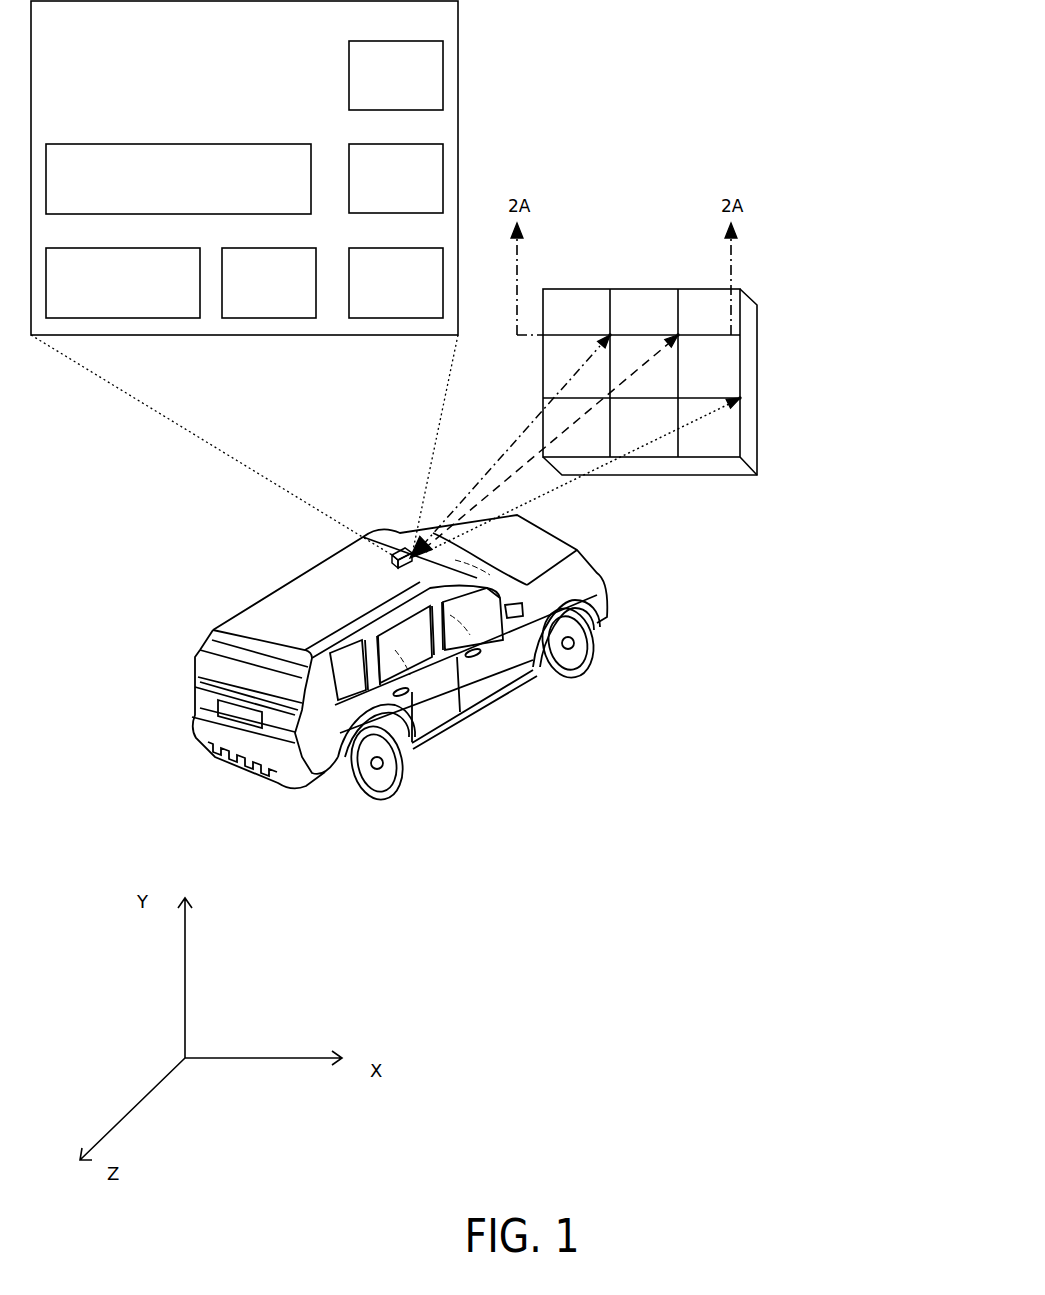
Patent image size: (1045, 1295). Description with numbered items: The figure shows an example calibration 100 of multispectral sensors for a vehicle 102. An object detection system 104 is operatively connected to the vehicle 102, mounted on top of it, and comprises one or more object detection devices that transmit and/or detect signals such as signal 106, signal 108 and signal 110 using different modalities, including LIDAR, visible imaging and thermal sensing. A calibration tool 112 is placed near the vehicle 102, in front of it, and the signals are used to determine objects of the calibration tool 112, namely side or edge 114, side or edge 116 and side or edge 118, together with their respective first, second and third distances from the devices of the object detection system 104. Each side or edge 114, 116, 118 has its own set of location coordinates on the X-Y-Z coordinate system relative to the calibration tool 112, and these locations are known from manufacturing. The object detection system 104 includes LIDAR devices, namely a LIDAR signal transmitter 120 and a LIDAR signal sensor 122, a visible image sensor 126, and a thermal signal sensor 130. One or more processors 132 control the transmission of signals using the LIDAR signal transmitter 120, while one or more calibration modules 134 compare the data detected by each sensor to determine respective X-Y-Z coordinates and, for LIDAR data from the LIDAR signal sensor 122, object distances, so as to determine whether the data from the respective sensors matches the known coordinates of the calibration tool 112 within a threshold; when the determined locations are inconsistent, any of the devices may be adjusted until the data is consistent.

The calibration 100 is at (884, 80).
The vehicle 102 is at (262, 593).
The object detection system 104 is at (390, 562).
The signal 106 is at (485, 475).
The signal 108 is at (617, 383).
The signal 110 is at (577, 475).
The calibration tool 112 is at (643, 289).
The side or edge 114 is at (600, 330).
The side or edge 116 is at (668, 330).
The side or edge 118 is at (730, 393).
The LIDAR signal transmitter 120 is at (274, 248).
The LIDAR signal sensor 122 is at (402, 248).
The visible image sensor 126 is at (402, 144).
The thermal signal sensor 130 is at (402, 41).
The processors 132 is at (178, 144).
The calibration modules 134 is at (144, 248).